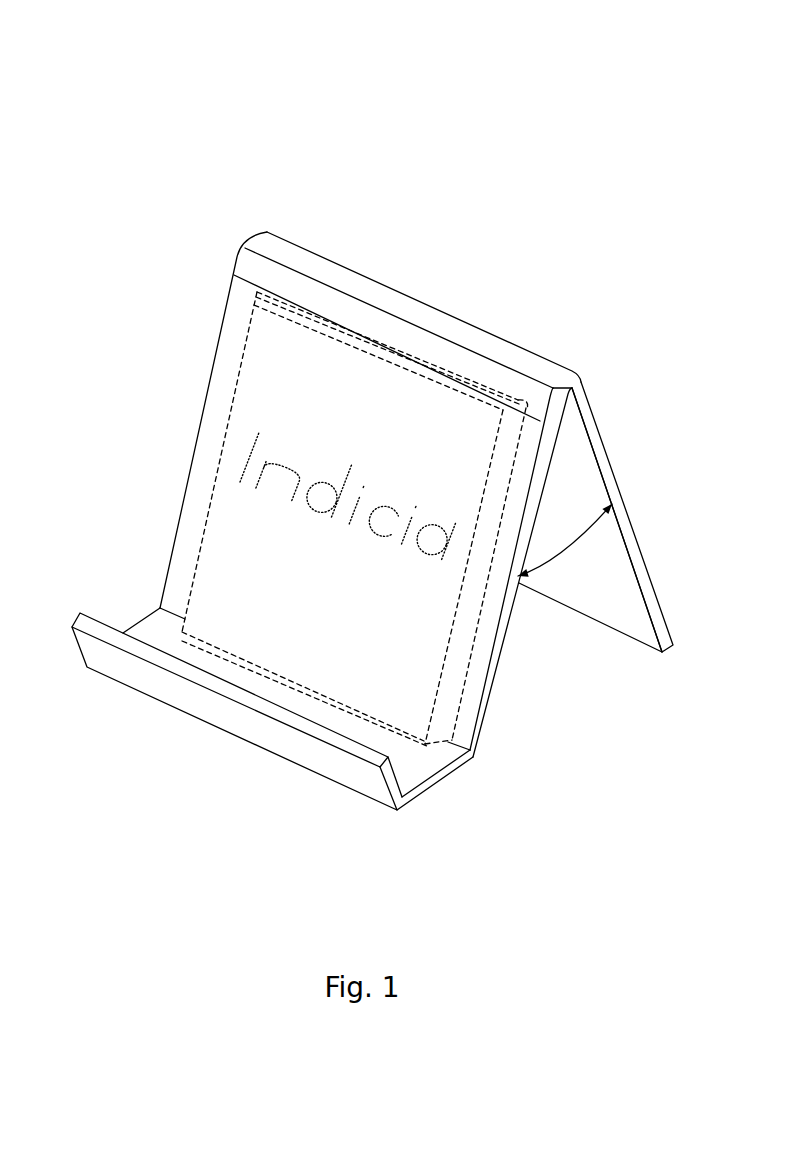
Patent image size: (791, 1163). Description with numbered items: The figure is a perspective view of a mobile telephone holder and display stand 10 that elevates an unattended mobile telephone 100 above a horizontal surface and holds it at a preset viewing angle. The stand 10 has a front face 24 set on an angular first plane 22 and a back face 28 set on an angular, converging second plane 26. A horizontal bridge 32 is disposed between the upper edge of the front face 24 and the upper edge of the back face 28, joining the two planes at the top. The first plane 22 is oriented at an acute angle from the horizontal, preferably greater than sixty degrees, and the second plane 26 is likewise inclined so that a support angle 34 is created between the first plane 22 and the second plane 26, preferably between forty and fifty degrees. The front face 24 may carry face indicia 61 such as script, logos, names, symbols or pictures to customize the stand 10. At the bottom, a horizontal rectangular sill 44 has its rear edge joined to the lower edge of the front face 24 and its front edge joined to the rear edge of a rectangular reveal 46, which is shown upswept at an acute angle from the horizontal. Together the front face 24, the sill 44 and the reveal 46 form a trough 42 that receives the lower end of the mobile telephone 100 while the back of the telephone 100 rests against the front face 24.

The mobile telephone holder and display stand 10 is at (86, 140).
The first plane 22 is at (492, 689).
The front face 24 is at (321, 377).
The second plane 26 is at (609, 462).
The back face 28 is at (650, 568).
The horizontal bridge 32 is at (548, 372).
The support angle 34 is at (577, 552).
The trough 42 is at (132, 615).
The horizontal rectangular sill 44 is at (415, 767).
The rectangular reveal 46 is at (79, 636).
The face indicia 61 is at (247, 470).
The mobile telephone 100 is at (240, 363).